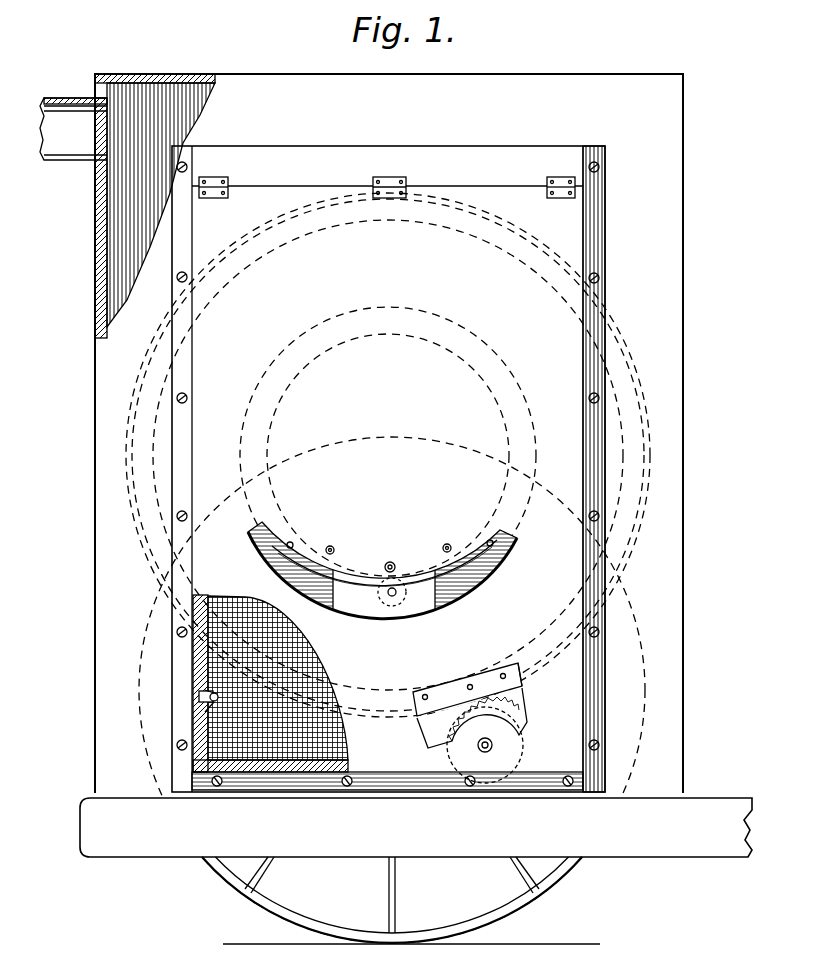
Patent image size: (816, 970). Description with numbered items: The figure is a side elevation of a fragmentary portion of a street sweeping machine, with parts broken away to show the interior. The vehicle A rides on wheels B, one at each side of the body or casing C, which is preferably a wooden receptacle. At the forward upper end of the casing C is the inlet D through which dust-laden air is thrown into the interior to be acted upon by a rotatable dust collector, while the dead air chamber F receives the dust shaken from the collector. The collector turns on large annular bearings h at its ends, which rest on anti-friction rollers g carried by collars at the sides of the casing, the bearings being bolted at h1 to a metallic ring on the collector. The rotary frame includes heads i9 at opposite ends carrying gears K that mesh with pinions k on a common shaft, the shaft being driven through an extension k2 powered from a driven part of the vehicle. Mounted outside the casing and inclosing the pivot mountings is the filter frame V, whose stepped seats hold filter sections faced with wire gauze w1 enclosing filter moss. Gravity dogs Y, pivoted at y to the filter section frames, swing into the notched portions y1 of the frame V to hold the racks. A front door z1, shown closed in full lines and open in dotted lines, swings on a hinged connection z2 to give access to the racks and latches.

The vehicle A is at (688, 812).
The wheels B is at (307, 910).
The casing C is at (697, 748).
The inlet D is at (78, 148).
The dead air chamber F is at (140, 240).
The filter frame V is at (388, 469).
The hinged connection z2 is at (229, 184).
The front door z1 is at (388, 568).
The anti-friction rollers g is at (288, 560).
The annular bearings h is at (390, 562).
The bolts h1 is at (334, 550).
The wire gauze w1 is at (318, 664).
The gravity dogs Y is at (199, 698).
The notched portions y1 is at (200, 692).
The pivot y is at (205, 712).
The heads i9 is at (462, 690).
The gears K is at (522, 682).
The pinions k is at (498, 718).
The extension k2 is at (494, 746).